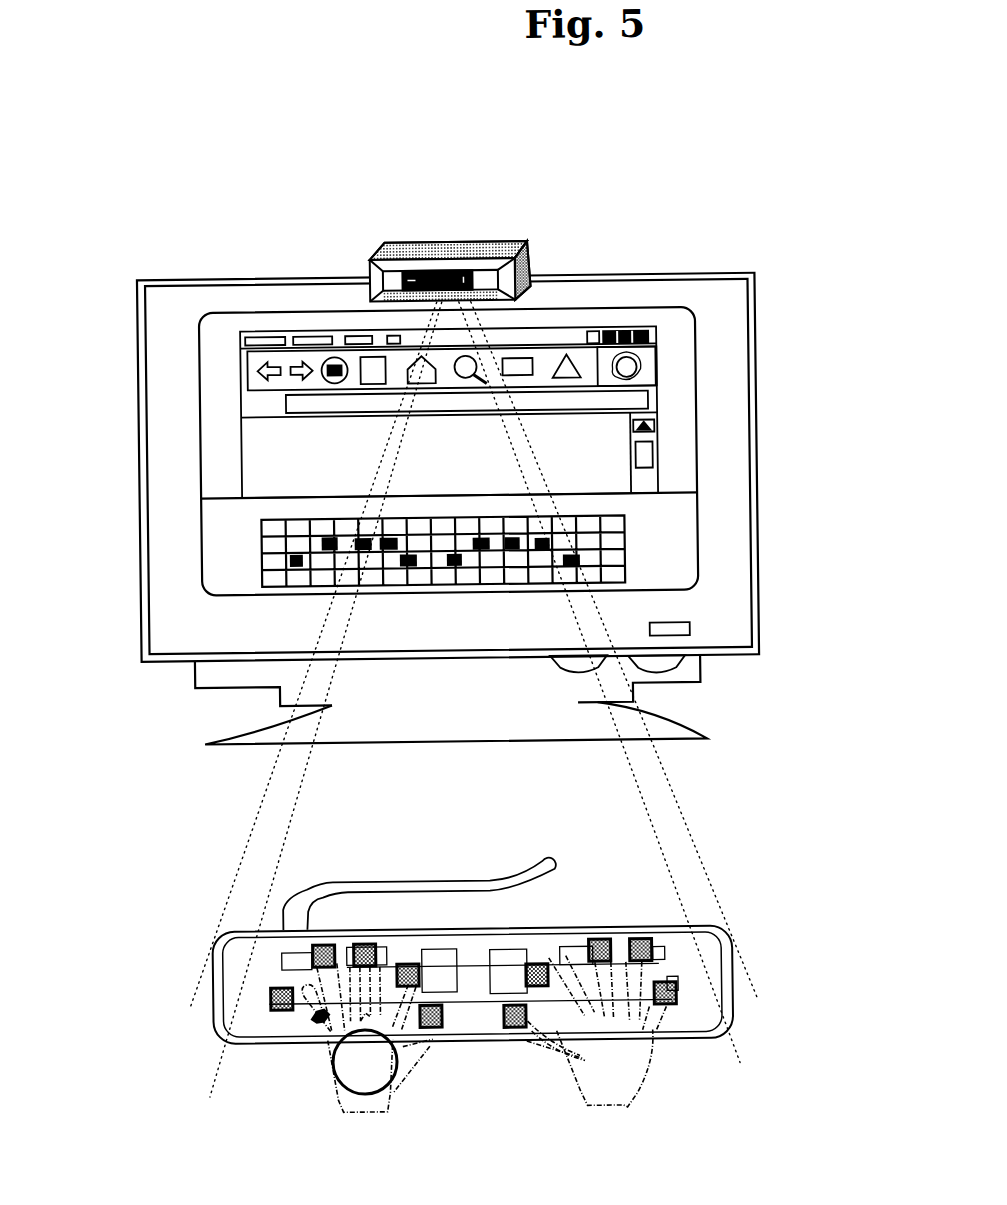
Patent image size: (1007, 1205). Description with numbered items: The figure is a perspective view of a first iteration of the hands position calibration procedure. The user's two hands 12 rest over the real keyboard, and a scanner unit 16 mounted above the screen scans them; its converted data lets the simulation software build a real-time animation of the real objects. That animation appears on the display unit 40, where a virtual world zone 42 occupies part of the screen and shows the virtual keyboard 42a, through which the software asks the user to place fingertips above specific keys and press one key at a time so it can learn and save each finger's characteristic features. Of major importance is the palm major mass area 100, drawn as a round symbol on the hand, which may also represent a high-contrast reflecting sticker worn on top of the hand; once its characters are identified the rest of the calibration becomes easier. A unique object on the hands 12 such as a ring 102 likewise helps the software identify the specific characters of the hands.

The hands 12 is at (369, 1108).
The scanner unit 16 is at (535, 264).
The display unit 40 is at (757, 366).
The virtual world zone 42 is at (673, 560).
The virtual keyboard 42a is at (293, 546).
The palm major mass area 100 is at (345, 1062).
The ring 102 is at (303, 1018).